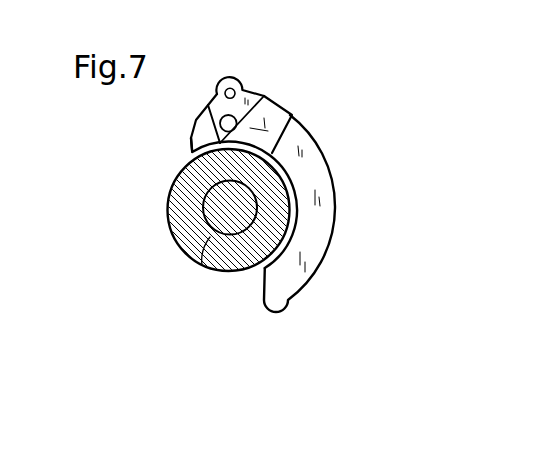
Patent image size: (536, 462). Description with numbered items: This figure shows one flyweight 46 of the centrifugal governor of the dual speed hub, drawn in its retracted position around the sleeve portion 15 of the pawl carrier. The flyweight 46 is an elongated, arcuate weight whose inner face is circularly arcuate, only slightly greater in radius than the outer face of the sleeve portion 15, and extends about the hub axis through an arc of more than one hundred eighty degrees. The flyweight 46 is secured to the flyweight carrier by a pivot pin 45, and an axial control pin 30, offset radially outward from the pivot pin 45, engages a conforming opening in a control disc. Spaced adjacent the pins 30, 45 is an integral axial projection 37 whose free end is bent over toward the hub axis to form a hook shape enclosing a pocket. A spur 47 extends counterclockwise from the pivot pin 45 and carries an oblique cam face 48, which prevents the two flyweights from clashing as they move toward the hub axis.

The sleeve portion 15 is at (203, 263).
The control pin 30 is at (227, 82).
The axial projection 37 is at (272, 123).
The pivot pin 45 is at (221, 118).
The flyweight 46 is at (287, 286).
The spur 47 is at (203, 132).
The oblique cam face 48 is at (189, 153).